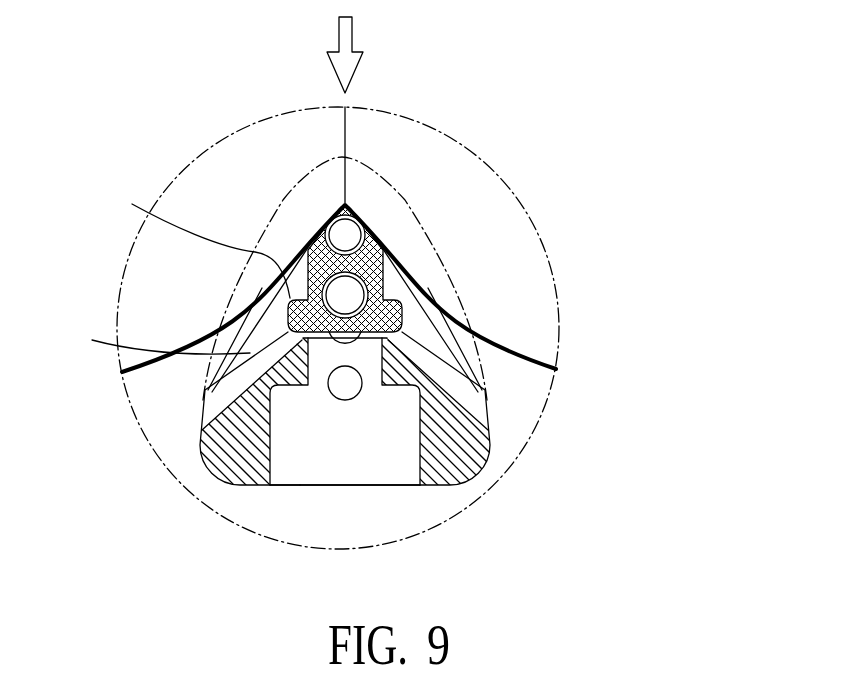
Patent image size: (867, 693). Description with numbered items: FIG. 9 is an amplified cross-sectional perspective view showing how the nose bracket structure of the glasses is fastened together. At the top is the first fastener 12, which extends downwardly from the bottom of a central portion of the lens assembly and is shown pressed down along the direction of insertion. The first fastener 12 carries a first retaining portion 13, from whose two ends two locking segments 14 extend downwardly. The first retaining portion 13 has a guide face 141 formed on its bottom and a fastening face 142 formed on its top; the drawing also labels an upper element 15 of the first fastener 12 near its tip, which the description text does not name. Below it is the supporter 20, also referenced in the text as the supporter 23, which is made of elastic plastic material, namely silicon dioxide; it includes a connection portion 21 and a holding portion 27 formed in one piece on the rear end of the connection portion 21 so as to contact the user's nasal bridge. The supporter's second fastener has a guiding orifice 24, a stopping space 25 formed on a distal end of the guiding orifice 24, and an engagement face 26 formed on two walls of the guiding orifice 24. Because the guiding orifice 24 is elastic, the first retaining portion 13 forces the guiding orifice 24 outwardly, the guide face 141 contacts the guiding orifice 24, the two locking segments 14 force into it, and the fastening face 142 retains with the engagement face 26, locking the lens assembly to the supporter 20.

The first fastener 12 is at (390, 253).
The first retaining portion 13 is at (304, 246).
The locking segments 14 is at (286, 302).
The guide face 141 is at (153, 340).
The fastening face 142 is at (194, 240).
The upper channel 15 is at (343, 238).
The supporter 20 is at (502, 443).
The connection portion 21 is at (248, 440).
The supporter 23 is at (340, 396).
The guiding orifice 24 is at (389, 340).
The stopping space 25 is at (385, 455).
The engagement face 26 is at (290, 406).
The holding portion 27 is at (372, 166).